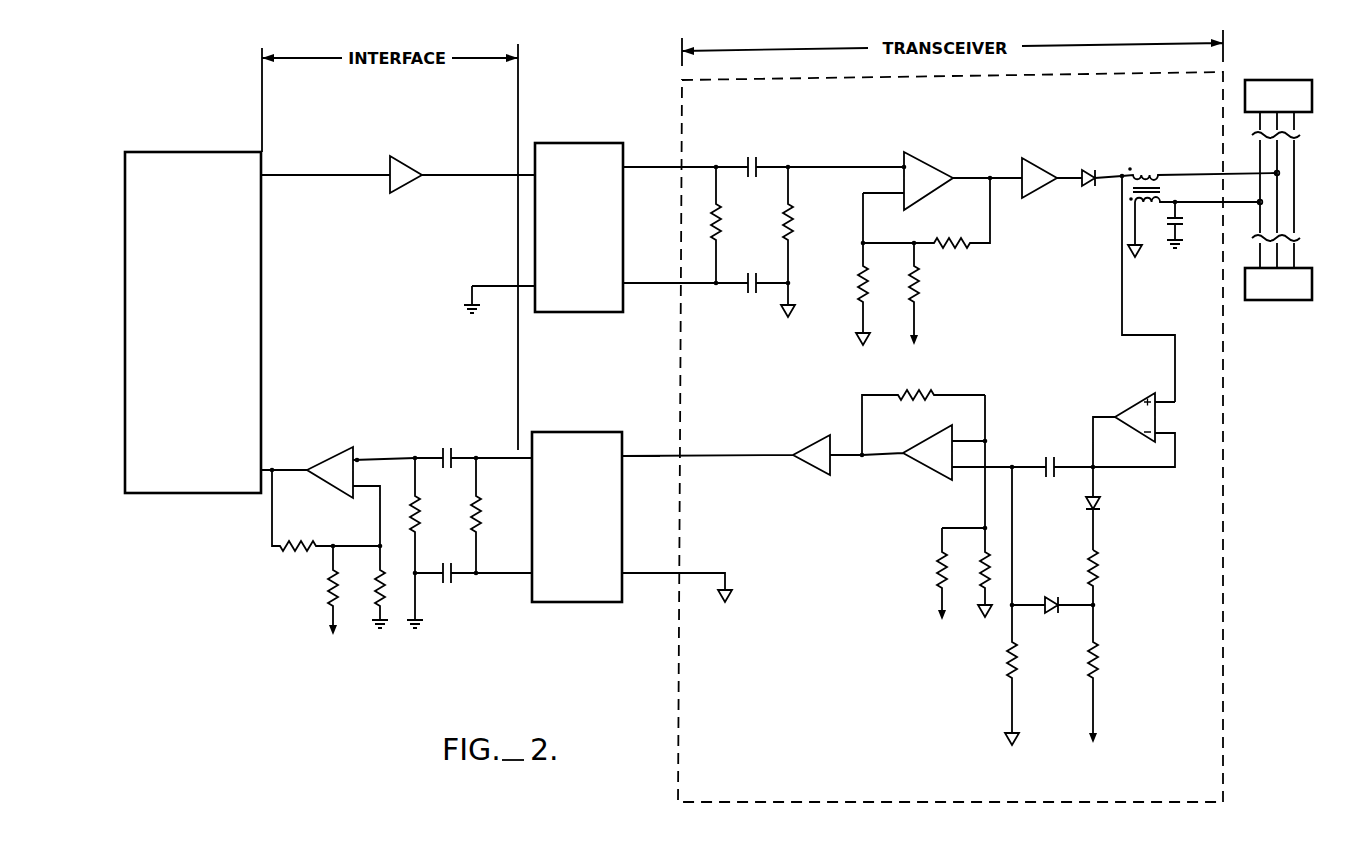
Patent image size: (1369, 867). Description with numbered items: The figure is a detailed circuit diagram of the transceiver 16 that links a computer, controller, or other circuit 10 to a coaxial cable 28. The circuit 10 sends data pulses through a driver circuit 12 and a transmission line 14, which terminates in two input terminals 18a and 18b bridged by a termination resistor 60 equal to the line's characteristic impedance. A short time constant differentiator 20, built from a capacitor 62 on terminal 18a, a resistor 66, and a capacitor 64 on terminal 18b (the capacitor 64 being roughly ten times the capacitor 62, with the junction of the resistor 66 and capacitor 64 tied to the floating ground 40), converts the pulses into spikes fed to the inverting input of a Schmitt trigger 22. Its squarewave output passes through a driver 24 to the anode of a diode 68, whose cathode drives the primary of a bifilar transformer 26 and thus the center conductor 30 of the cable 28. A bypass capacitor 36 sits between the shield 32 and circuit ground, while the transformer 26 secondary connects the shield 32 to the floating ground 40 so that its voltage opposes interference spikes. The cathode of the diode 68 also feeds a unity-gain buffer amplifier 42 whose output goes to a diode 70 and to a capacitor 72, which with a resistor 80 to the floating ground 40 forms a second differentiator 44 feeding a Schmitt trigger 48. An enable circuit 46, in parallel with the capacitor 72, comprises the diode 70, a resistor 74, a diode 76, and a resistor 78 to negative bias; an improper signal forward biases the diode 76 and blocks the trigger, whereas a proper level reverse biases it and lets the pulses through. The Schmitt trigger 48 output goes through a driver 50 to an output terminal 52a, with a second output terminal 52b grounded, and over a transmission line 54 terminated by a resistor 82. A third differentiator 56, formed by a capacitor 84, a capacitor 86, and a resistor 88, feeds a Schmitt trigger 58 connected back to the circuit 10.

The computer, controller, or other circuit 10 is at (220, 152).
The driver circuit 12 is at (413, 151).
The transmission line 14 is at (596, 143).
The transceiver 16 is at (1175, 72).
The input terminal 18a is at (640, 167).
The input terminal 18b is at (640, 283).
The short time constant differentiator 20 is at (808, 226).
The Schmitt trigger 22 is at (920, 172).
The driver 24 is at (1037, 165).
The bifilar transformer 26 is at (1152, 170).
The coaxial cable 28 is at (1295, 177).
The center conductor 30 is at (1282, 160).
The shield 32 is at (1300, 184).
The bypass capacitor 36 is at (1186, 225).
The floating ground 40 is at (1016, 733).
The buffer amplifier 42 is at (1134, 412).
The short time constant differentiator 44 is at (1033, 462).
The enable circuit 46 is at (1086, 616).
The Schmitt trigger 48 is at (928, 441).
The driver 50 is at (814, 442).
The output terminal 52a is at (634, 456).
The output terminal 52b is at (632, 573).
The transmission line 54 is at (587, 432).
The short time constant differentiator 56 is at (443, 453).
The Schmitt trigger 58 is at (345, 448).
The termination resistor 60 is at (721, 224).
The capacitor 62 is at (753, 160).
The capacitor 64 is at (753, 276).
The resistor 66 is at (794, 225).
The diode 68 is at (1086, 168).
The diode 70 is at (1100, 506).
The capacitor 72 is at (1060, 451).
The resistor 74 is at (1100, 566).
The diode 76 is at (1049, 598).
The resistor 78 is at (1100, 673).
The resistor 80 is at (1020, 673).
The termination resistor 82 is at (483, 520).
The capacitor 84 is at (457, 457).
The capacitor 86 is at (451, 585).
The resistor 88 is at (422, 520).